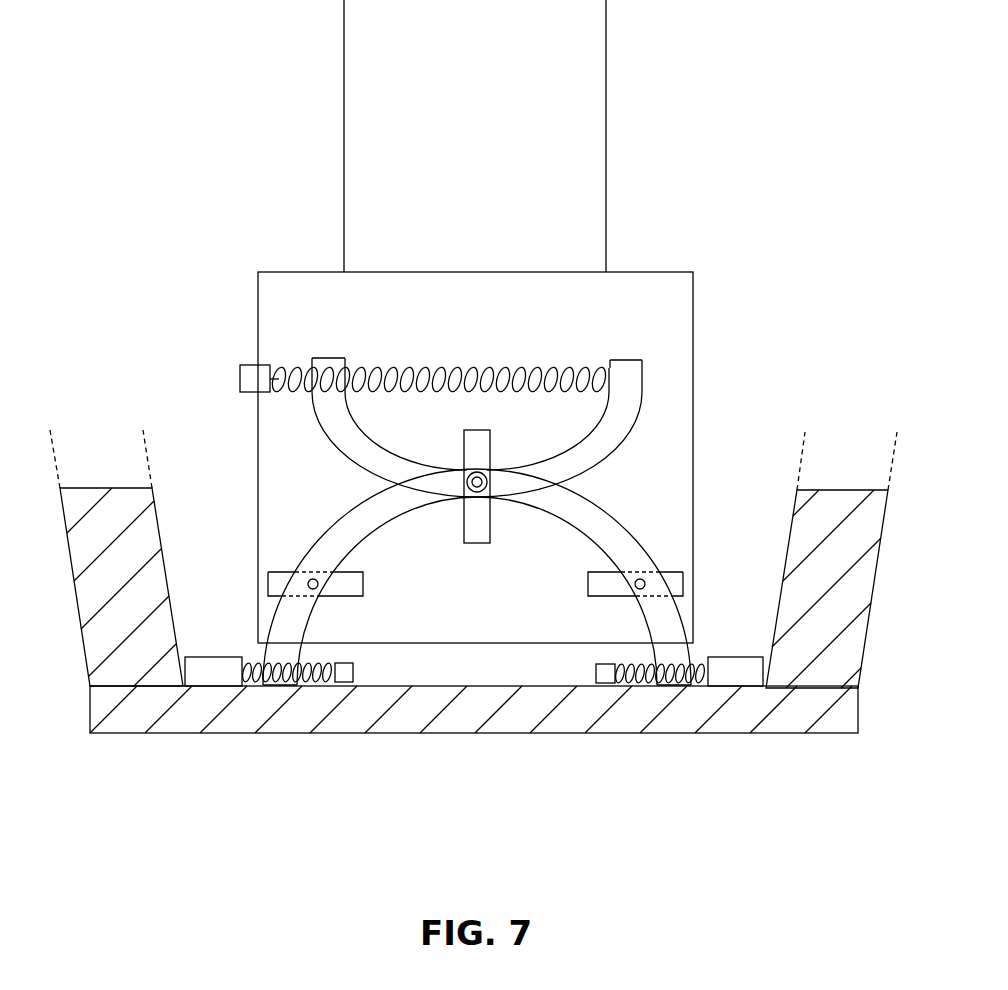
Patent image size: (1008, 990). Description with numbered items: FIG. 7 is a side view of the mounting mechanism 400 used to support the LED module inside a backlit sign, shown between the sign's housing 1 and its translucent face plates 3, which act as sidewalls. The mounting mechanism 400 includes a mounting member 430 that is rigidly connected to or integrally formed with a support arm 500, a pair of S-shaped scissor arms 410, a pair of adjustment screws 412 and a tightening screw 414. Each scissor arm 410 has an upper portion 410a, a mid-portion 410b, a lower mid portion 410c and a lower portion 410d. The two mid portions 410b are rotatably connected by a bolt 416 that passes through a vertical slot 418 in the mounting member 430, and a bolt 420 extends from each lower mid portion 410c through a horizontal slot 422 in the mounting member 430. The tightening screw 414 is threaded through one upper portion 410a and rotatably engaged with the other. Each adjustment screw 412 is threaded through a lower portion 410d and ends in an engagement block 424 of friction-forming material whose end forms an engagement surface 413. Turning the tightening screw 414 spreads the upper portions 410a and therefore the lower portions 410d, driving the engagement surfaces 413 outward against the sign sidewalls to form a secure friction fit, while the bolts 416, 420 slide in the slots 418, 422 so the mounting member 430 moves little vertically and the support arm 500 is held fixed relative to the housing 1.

The support arm 500 is at (606, 37).
The mounting mechanism 400 is at (681, 227).
The mounting member 430 is at (695, 366).
The tightening screw 414 is at (286, 362).
The scissor arms 410 is at (350, 530).
The upper portion 410a is at (327, 357).
The mid-portion 410b is at (490, 468).
The lower mid portion 410c is at (625, 548).
The lower portion 410d is at (285, 655).
The bolt 416 is at (575, 500).
The vertical slot 418 is at (484, 440).
The bolt 420 is at (306, 570).
The horizontal slot 422 is at (676, 580).
The adjustment screw 412 is at (362, 682).
The engagement block 424 is at (220, 677).
The engagement surface 413 is at (183, 682).
The translucent face plate 3 is at (192, 702).
The housing 1 is at (350, 708).